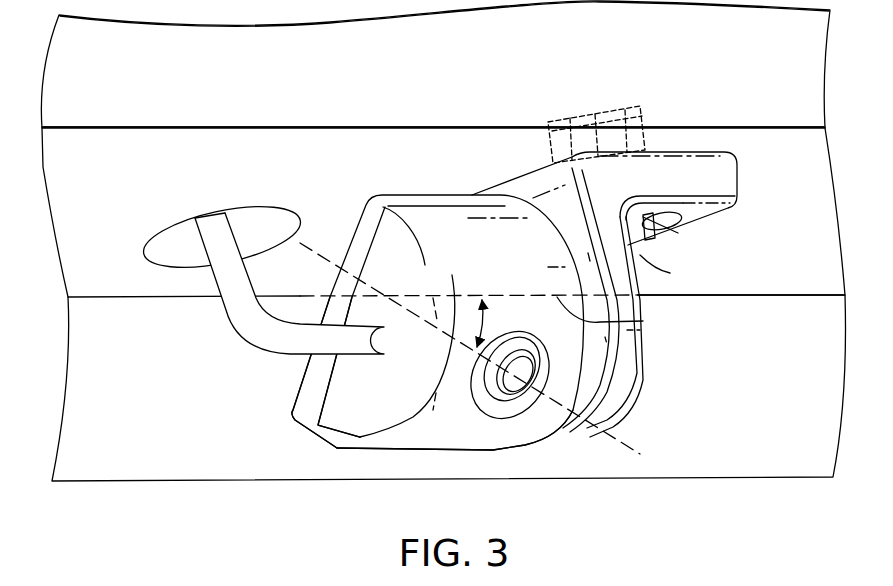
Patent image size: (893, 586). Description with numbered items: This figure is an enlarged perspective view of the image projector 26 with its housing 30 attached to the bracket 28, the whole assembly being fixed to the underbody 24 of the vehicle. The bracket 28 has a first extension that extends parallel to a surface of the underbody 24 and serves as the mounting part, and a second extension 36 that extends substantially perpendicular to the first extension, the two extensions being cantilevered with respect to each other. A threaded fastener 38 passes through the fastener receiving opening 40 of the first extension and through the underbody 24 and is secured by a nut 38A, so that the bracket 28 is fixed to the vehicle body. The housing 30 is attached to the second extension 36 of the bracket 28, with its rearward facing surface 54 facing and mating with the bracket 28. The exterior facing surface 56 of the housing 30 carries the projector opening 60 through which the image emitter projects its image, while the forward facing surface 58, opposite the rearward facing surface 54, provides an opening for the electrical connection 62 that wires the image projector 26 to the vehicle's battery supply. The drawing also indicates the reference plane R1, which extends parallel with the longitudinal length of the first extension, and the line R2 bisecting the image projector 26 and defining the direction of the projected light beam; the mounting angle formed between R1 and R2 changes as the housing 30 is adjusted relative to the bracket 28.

The underbody 24 is at (326, 214).
The image projector 26 is at (648, 59).
The bracket 28 is at (693, 124).
The housing 30 is at (417, 175).
The second extension 36 is at (592, 367).
The fastener 38 is at (638, 250).
The nut 38A is at (566, 106).
The fastener receiving opening 40 is at (660, 230).
The rearward facing surface 54 is at (502, 449).
The exterior facing surface 56 is at (448, 429).
The forward facing surface 58 is at (365, 400).
The projector opening 60 is at (516, 397).
The electrical connection 62 is at (253, 322).
The reference plane R1 is at (643, 322).
The line bisecting the image projector R2 is at (626, 443).